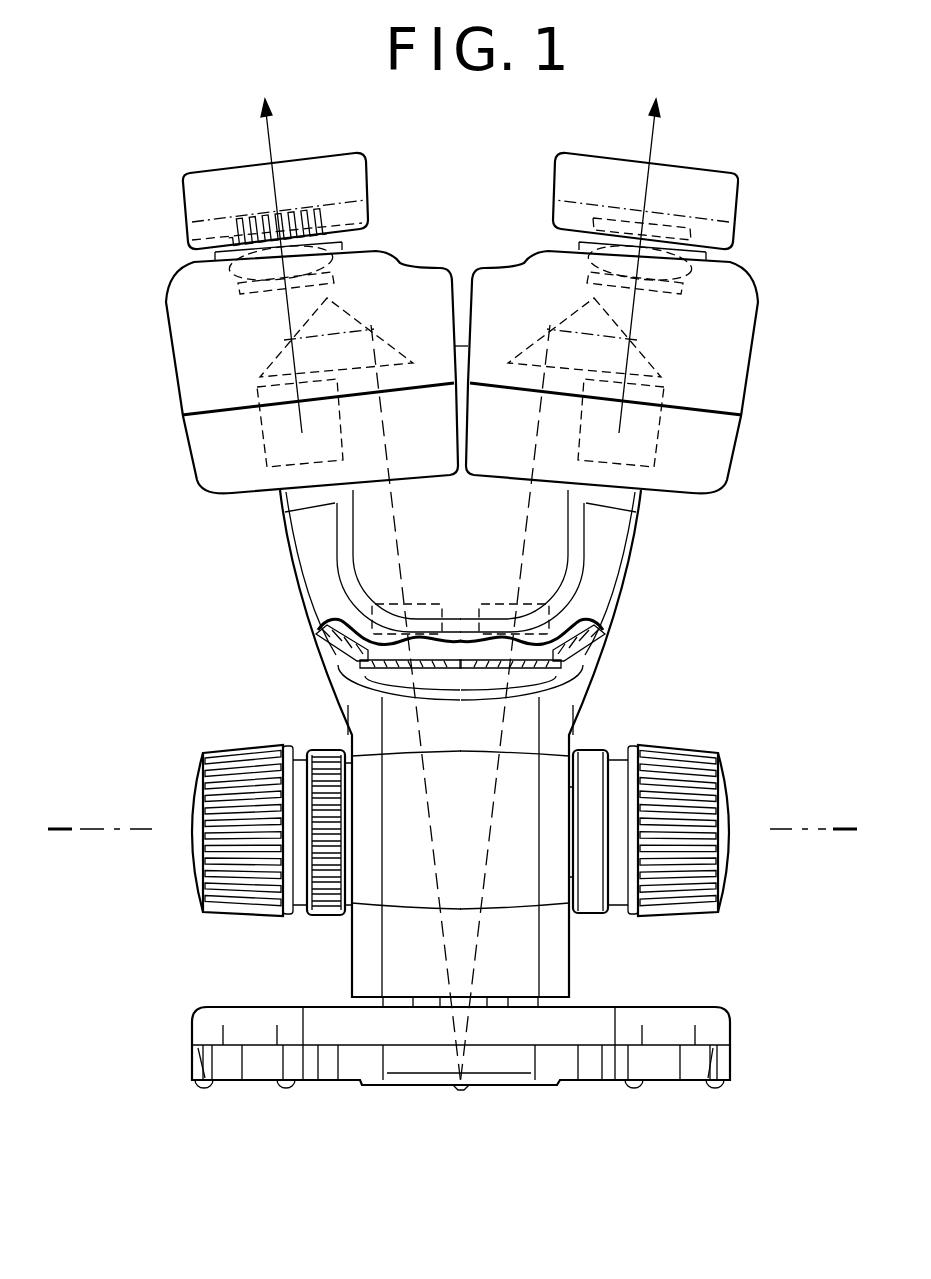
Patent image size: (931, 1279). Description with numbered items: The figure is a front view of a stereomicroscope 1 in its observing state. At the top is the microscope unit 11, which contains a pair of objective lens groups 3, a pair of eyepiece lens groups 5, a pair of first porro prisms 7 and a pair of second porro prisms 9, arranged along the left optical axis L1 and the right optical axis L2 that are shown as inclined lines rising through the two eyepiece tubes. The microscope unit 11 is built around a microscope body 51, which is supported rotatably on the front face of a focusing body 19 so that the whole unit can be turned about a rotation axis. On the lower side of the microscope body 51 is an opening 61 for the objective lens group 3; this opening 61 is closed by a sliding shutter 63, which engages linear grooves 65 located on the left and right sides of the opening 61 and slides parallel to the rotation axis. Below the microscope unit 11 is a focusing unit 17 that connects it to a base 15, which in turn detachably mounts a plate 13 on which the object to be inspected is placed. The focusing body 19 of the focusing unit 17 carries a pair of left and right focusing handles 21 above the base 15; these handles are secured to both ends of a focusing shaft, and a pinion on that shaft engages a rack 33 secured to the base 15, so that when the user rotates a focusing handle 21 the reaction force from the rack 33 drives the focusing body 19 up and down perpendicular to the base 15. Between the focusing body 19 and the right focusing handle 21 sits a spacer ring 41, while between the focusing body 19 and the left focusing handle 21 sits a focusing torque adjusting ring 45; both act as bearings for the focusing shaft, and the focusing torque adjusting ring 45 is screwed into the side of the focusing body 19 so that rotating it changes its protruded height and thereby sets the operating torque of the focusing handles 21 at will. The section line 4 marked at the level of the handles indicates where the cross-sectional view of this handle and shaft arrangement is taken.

The stereomicroscope 1 is at (452, 625).
The objective lens groups 3 is at (358, 618).
The eyepiece lens groups 5 is at (226, 269).
The first porro prisms 7 is at (271, 357).
The second porro prisms 9 is at (278, 430).
The microscope unit 11 is at (660, 508).
The plate 13 is at (515, 1030).
The base 15 is at (487, 1049).
The focusing unit 17 is at (467, 824).
The focusing body 19 is at (445, 743).
The focusing handles 21 is at (215, 793).
The rack 33 is at (530, 1003).
The spacer ring 41 is at (597, 905).
The focusing torque adjusting ring 45 is at (328, 905).
The microscope body 51 is at (292, 557).
The opening 61 is at (350, 718).
The sliding shutter 63 is at (363, 678).
The linear grooves 65 is at (340, 658).
The section line 4— 4 is at (62, 825).
The left optical axis L1 is at (264, 143).
The right optical axis L2 is at (657, 143).